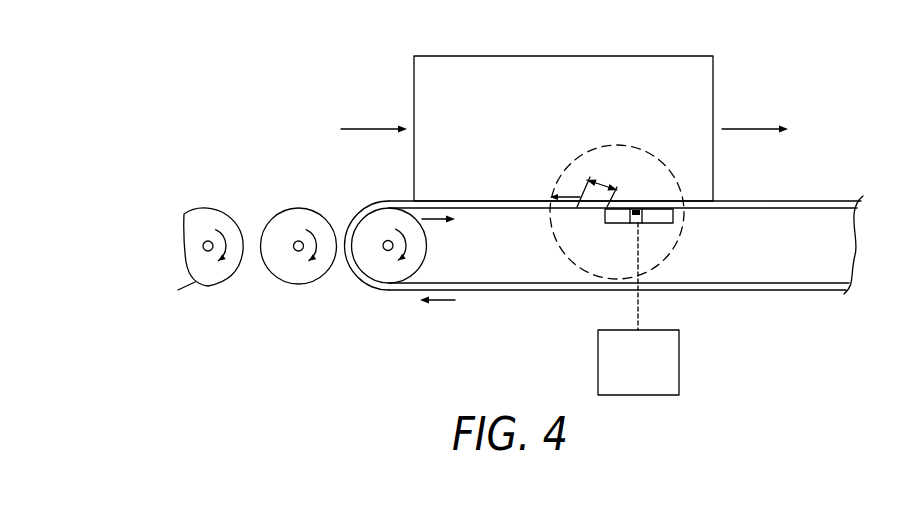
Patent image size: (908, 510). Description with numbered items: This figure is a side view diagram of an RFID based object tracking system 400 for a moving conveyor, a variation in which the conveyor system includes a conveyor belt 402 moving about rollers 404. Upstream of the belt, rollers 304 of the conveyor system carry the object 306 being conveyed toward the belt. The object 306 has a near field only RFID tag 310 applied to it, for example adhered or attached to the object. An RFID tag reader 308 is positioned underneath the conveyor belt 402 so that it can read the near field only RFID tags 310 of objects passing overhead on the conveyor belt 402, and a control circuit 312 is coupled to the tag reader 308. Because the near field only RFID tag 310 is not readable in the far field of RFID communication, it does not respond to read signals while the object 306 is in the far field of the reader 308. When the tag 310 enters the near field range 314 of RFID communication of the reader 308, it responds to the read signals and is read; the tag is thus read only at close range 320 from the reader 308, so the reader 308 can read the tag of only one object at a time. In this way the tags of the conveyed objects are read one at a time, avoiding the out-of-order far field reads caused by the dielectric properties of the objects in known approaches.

The RFID based object tracking system 400 is at (197, 86).
The rollers 304 is at (300, 207).
The object 306 is at (414, 91).
The RFID tag reader 308 is at (612, 224).
The near field only RFID tag 310 is at (567, 198).
The control circuit 312 is at (680, 358).
The near field range 314 is at (673, 245).
The close range 320 is at (604, 182).
The conveyor belt 402 is at (376, 288).
The rollers 404 is at (426, 252).